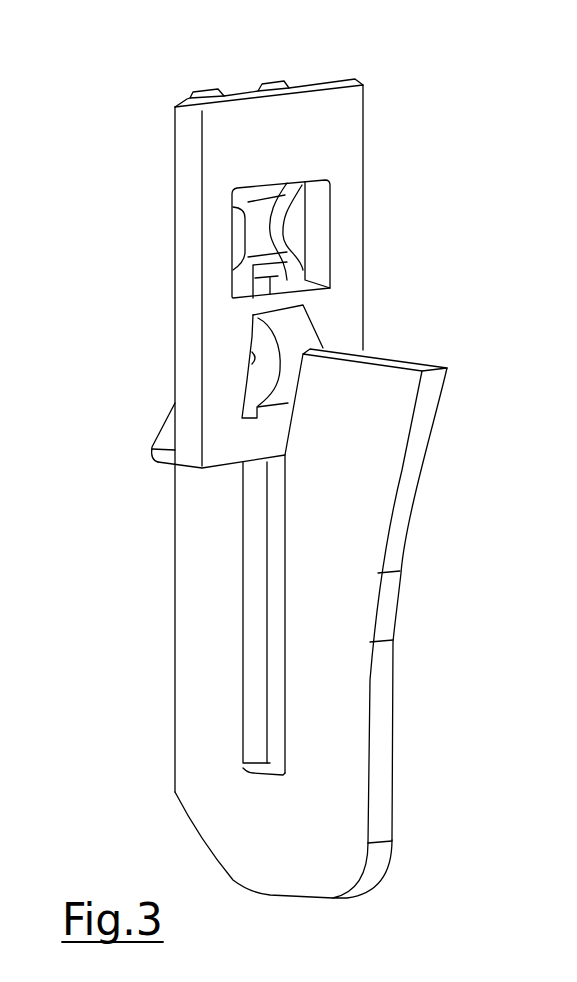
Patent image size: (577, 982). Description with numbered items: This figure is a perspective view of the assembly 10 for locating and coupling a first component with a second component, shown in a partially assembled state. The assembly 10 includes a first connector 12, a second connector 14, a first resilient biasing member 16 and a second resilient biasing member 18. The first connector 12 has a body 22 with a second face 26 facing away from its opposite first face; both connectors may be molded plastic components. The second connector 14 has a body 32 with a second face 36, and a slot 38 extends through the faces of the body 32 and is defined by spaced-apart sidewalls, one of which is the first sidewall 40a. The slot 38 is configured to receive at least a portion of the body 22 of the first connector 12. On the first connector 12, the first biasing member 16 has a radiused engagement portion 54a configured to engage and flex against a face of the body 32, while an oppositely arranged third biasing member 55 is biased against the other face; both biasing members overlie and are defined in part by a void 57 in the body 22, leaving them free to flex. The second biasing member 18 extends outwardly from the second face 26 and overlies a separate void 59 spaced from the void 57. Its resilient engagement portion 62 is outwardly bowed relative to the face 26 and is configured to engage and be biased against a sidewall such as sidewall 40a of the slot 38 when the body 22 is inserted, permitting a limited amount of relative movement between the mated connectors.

The assembly 10 is at (482, 173).
The first connector 12 is at (177, 192).
The second connector 14 is at (178, 612).
The first resilient biasing member 16 is at (290, 198).
The second resilient biasing member 18 is at (308, 332).
The body 22 is at (188, 143).
The second face 26 is at (308, 112).
The body 32 is at (413, 475).
The second face 36 is at (338, 733).
The slot 38 is at (275, 537).
The first sidewall 40a is at (253, 678).
The engagement portion 54a is at (257, 230).
The third biasing member 55 is at (237, 236).
The void 57 is at (308, 185).
The void 59 is at (250, 357).
The resilient engagement portion 62 is at (287, 353).